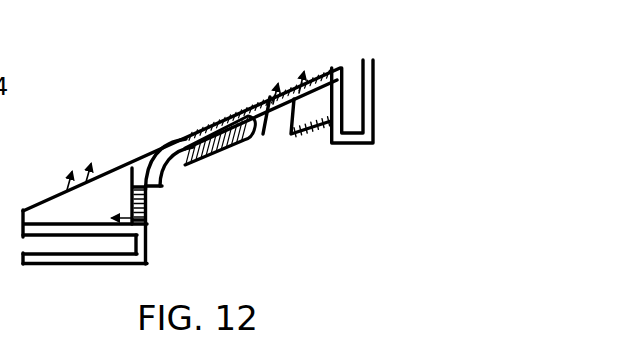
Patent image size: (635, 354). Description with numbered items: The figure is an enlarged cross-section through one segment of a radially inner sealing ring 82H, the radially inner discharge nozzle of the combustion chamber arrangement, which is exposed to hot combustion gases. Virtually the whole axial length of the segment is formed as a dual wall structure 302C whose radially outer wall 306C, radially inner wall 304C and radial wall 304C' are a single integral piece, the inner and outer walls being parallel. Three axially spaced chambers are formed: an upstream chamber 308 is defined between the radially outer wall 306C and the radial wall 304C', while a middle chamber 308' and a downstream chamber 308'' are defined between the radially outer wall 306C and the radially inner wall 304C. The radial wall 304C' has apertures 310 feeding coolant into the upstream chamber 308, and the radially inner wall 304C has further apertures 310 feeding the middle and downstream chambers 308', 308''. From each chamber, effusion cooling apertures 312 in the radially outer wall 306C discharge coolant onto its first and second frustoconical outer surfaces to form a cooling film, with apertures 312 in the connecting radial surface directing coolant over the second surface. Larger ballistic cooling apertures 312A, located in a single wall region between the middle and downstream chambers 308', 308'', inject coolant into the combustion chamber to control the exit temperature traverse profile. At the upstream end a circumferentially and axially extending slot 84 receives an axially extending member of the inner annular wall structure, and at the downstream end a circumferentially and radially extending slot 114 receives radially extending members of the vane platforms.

The upstream chamber 308 is at (174, 152).
The middle chamber 308' is at (249, 92).
The downstream chamber 308'' is at (343, 67).
The part annular circumferentially and axially extending slot 84 is at (83, 243).
The dual wall structure 302C is at (304, 217).
The radially inner wall 304C is at (233, 170).
The radial wall 304C' is at (203, 221).
The radially outer wall 306C is at (163, 143).
The apertures 310 is at (310, 132).
The effusion cooling apertures 312 is at (110, 172).
The ballistic cooling apertures 312A is at (270, 108).
The part annular circumferentially and radially extending slot 114 is at (353, 93).
The radially inner sealing ring 82H is at (340, 178).